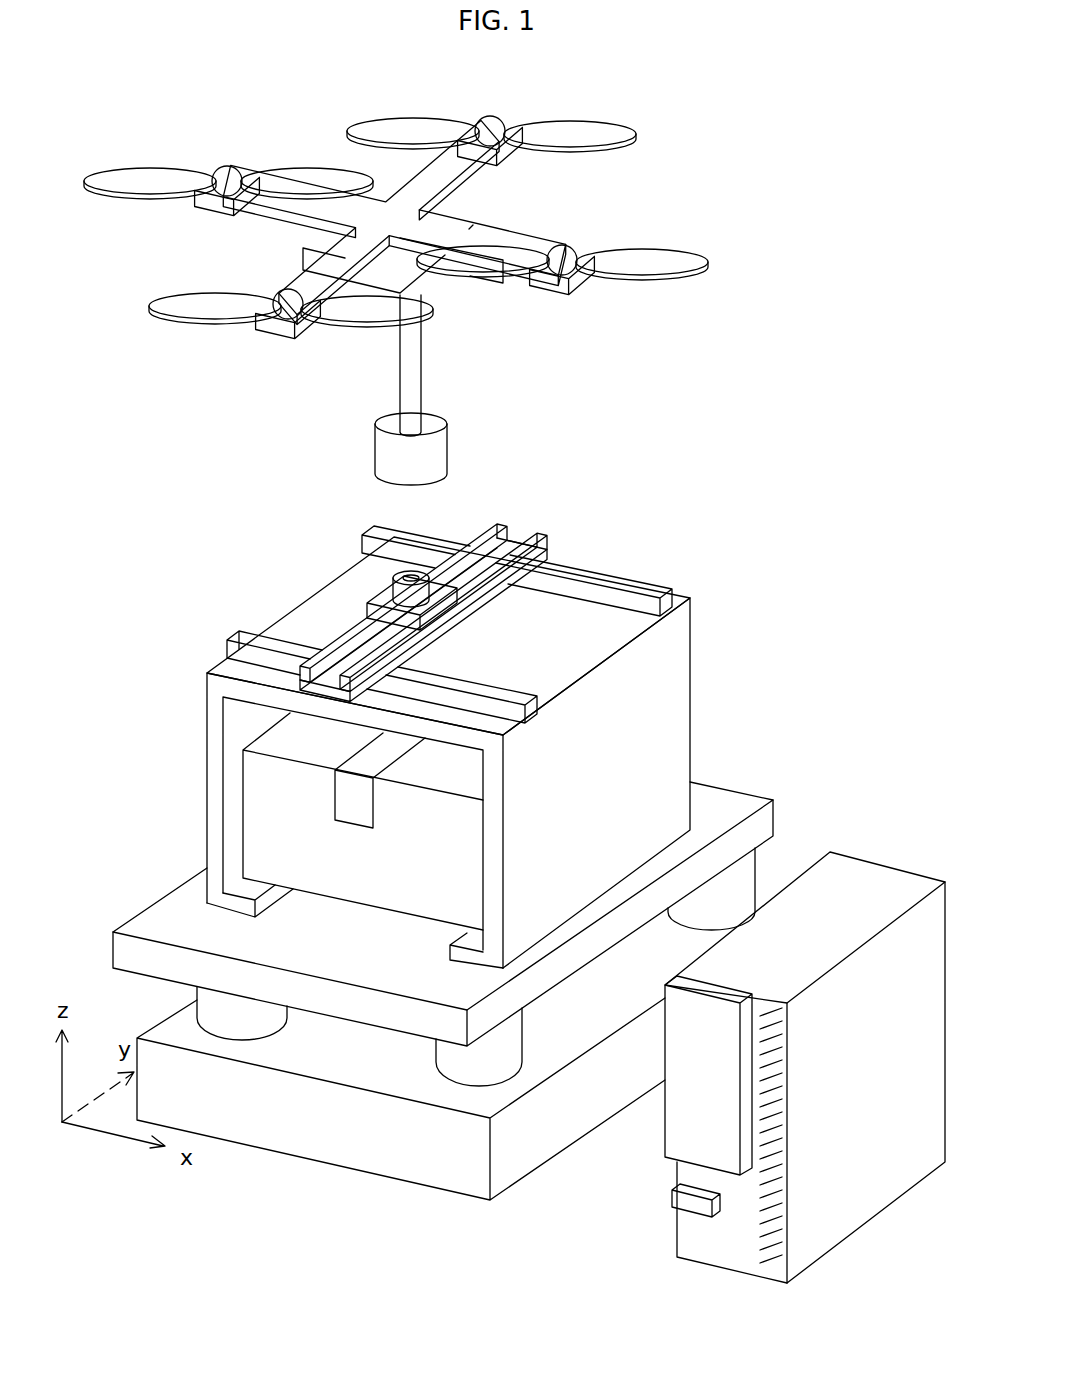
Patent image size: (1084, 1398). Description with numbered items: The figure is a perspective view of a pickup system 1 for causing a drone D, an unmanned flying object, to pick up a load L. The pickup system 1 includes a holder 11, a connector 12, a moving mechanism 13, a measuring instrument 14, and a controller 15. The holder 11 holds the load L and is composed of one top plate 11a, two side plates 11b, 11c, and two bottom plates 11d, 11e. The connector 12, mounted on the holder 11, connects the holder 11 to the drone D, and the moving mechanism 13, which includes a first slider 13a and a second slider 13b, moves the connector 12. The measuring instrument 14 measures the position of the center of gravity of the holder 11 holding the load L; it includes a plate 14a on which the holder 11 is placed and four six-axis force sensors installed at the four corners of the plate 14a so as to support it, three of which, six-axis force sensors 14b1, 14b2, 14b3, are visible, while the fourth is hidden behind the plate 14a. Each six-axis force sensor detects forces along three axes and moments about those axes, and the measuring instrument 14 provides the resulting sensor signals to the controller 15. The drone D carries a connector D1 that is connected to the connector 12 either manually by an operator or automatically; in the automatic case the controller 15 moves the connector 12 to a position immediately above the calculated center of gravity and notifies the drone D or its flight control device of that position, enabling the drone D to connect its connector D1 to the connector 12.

The pickup system 1 is at (848, 264).
The drone D is at (603, 109).
The connector of the drone D1 is at (375, 444).
The holder 11 is at (441, 760).
The top plate 11a is at (534, 676).
The side plate 11b is at (559, 791).
The side plate 11c is at (207, 764).
The bottom plate 11d is at (466, 940).
The bottom plate 11e is at (240, 895).
The load L is at (356, 905).
The connector 12 is at (417, 569).
The moving mechanism 13 is at (449, 580).
The first slider 13a is at (532, 534).
The second slider 13b is at (377, 593).
The measuring instrument 14 is at (477, 952).
The plate 14a is at (777, 812).
The six-axis force sensor 14b1 is at (195, 992).
The six-axis force sensor 14b2 is at (445, 1053).
The six-axis force sensor 14b3 is at (757, 858).
The controller 15 is at (886, 866).